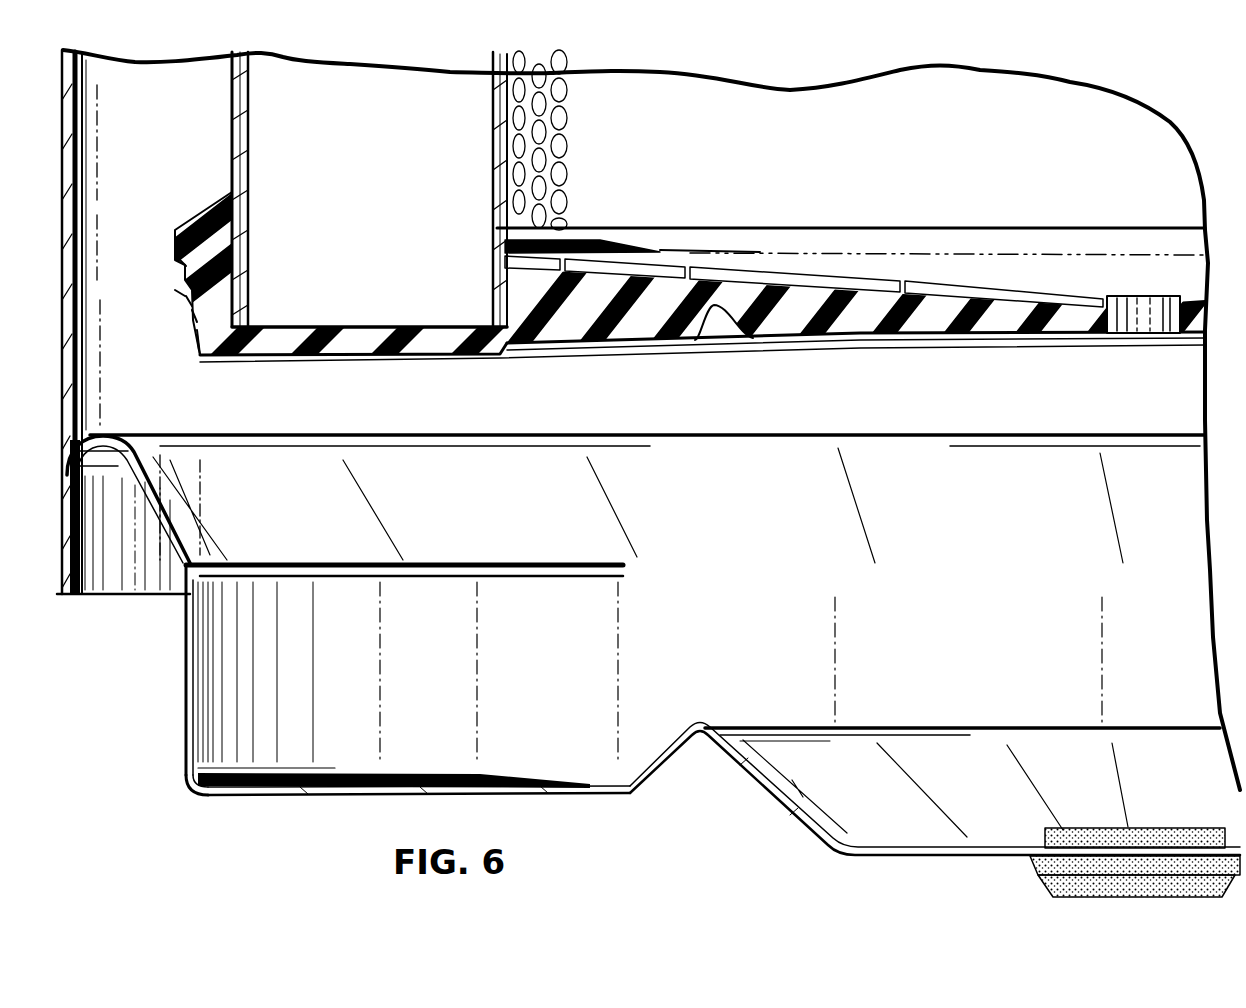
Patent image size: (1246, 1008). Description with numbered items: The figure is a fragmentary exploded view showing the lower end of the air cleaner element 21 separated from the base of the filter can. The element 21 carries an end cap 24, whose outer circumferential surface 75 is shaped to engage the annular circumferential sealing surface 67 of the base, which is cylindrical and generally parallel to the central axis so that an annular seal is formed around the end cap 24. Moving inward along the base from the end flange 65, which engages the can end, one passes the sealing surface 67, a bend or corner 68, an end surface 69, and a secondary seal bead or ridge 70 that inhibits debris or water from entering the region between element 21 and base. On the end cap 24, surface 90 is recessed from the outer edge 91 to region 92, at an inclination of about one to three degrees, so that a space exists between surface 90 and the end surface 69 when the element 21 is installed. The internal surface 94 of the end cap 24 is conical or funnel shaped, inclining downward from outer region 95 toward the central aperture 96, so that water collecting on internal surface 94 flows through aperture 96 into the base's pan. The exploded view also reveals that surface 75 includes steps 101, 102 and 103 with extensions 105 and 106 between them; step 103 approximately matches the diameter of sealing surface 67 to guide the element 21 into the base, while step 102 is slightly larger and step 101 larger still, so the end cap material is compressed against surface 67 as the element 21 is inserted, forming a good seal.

The air cleaner element 21 is at (390, 100).
The end cap 24 is at (720, 270).
The end flange 65 is at (110, 578).
The annular circumferential sealing surface 67 is at (193, 702).
The bend or corner 68 is at (193, 795).
The end surface 69 is at (572, 786).
The secondary seal bead or ridge 70 is at (703, 726).
The outer circumferential surface 75 is at (176, 296).
The surface 90 is at (478, 358).
The outer edge 91 is at (203, 362).
The region 92 is at (665, 346).
The internal surface 94 is at (815, 280).
The outer region 95 is at (522, 226).
The central aperture 96 is at (1113, 296).
The step 101 is at (175, 235).
The step 102 is at (187, 302).
The step 103 is at (197, 345).
The extension 105 is at (180, 268).
The extension 106 is at (193, 318).